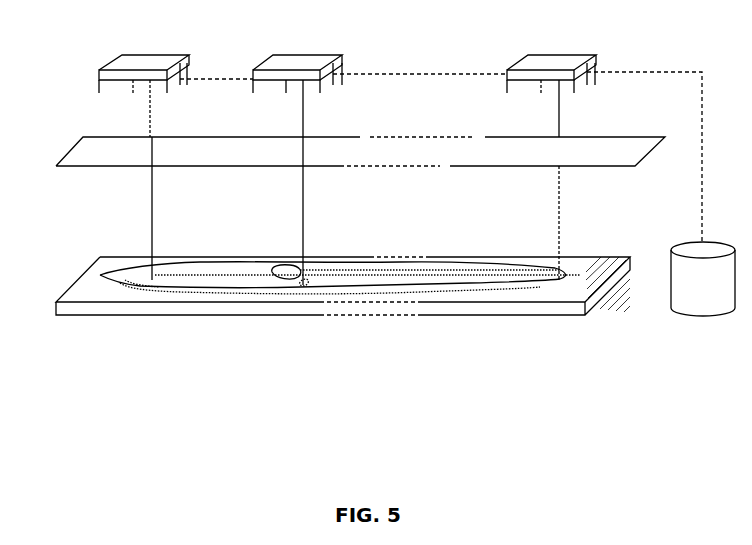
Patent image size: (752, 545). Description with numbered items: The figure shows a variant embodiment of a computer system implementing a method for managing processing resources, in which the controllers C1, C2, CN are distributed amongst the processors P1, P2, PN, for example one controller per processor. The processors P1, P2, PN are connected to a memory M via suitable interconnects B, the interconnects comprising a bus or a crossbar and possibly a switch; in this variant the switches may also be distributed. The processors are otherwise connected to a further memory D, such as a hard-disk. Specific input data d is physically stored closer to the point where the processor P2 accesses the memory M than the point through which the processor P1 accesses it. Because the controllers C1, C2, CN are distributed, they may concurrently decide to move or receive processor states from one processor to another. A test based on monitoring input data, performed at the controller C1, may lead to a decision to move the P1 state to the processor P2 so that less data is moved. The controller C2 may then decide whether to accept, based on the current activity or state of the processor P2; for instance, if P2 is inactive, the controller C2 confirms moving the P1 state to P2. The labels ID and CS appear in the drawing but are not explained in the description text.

The controller C1 is at (160, 55).
The controller C2 is at (314, 55).
The controller CN is at (570, 55).
The processor P1 is at (182, 65).
The processor P2 is at (340, 65).
The processor PN is at (595, 65).
The interconnect B is at (190, 139).
The memory M is at (175, 260).
The input data d is at (290, 265).
The ink drop ID is at (440, 262).
The memory D is at (678, 303).
The coating stage CS is at (436, 378).